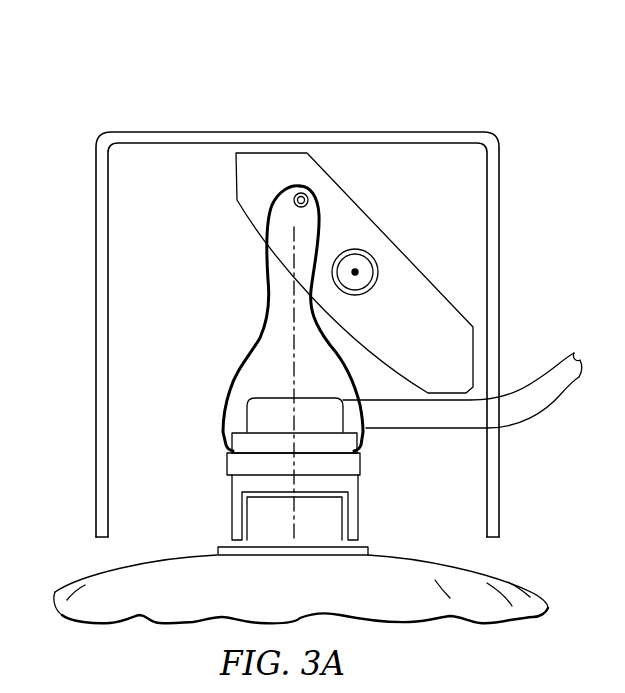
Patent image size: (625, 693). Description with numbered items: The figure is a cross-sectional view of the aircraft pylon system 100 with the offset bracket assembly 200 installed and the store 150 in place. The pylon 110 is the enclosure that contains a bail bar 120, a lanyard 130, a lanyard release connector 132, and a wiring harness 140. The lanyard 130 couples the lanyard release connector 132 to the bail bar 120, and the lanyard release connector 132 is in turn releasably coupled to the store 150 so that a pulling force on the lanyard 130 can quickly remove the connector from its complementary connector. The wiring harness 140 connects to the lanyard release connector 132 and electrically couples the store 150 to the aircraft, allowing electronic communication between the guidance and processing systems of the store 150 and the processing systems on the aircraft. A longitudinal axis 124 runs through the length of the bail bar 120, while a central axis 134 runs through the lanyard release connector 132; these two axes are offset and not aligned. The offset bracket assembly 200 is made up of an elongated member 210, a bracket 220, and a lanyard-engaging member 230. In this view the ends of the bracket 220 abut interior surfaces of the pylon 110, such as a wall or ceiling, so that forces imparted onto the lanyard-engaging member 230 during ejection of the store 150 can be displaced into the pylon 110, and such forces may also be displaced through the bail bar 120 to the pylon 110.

The aircraft pylon system 100 is at (212, 87).
The pylon 110 is at (499, 232).
The bail bar 120 is at (374, 264).
The longitudinal axis 124 is at (357, 274).
The lanyard 130 is at (265, 323).
The lanyard release connector 132 is at (358, 483).
The central axis 134 is at (290, 377).
The wiring harness 140 is at (530, 395).
The store 150 is at (307, 595).
The offset bracket assembly 200 is at (221, 209).
The elongated member 210 is at (356, 250).
The bracket 220 is at (434, 281).
The lanyard-engaging member 230 is at (296, 205).